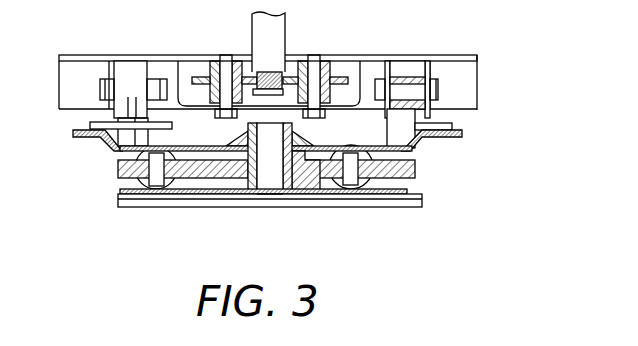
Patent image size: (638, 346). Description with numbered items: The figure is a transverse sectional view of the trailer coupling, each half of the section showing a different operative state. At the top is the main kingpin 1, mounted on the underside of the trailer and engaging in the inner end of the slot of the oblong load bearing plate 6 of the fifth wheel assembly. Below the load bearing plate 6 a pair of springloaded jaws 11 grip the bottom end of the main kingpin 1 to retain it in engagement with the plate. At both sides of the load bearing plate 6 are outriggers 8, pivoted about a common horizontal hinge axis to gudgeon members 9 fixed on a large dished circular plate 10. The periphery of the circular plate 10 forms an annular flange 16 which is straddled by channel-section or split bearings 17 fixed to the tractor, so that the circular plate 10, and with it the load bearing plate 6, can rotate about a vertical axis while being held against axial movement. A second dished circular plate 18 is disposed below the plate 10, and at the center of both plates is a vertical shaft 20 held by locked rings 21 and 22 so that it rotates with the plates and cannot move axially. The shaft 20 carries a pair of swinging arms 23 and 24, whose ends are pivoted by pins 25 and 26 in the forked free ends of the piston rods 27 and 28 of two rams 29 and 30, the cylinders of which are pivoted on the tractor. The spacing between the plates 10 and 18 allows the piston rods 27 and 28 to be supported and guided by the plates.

The main kingpin 1 is at (251, 31).
The load bearing plate 6 is at (340, 57).
The outriggers 8 is at (80, 55).
The gudgeon members 9 is at (128, 72).
The dished circular plate 10 is at (119, 148).
The springloaded jaws 11 is at (194, 77).
The annular flange 16 is at (462, 137).
The bearings 17 is at (90, 125).
The second dished circular plate 18 is at (118, 200).
The vertical shaft 20 is at (265, 172).
The locked ring 21 is at (304, 178).
The locked ring 22 is at (270, 199).
The swinging arm 23 is at (118, 168).
The swinging arm 24 is at (416, 170).
The pin 25 is at (156, 187).
The pin 26 is at (350, 186).
The piston rod 27 is at (146, 186).
The piston rod 28 is at (372, 185).
The ram 29 is at (112, 191).
The ram 30 is at (408, 186).